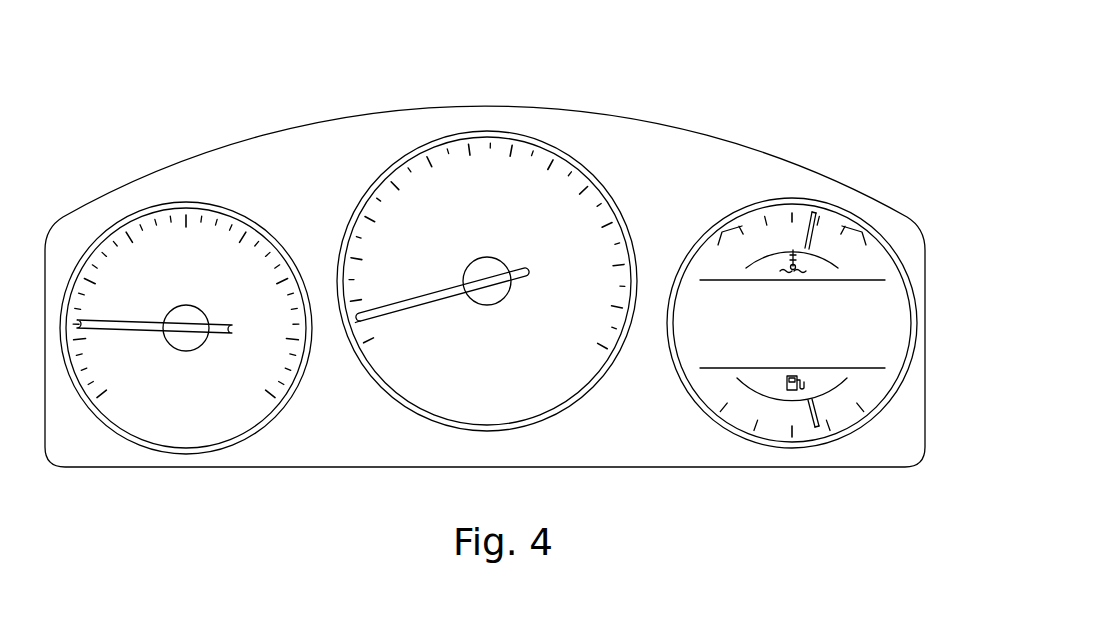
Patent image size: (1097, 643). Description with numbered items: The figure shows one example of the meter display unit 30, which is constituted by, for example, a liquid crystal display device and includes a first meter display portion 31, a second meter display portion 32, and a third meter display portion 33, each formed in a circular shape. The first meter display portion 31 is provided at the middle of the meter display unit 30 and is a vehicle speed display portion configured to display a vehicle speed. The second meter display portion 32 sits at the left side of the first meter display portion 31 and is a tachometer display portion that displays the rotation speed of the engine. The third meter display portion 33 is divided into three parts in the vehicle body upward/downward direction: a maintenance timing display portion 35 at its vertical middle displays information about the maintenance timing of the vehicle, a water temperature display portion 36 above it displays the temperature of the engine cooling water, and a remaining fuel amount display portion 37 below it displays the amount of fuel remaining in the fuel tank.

The meter display unit 30 is at (673, 126).
The first meter display portion 31 is at (492, 130).
The second meter display portion 32 is at (158, 203).
The third meter display portion 33 is at (814, 288).
The maintenance timing display portion 35 is at (883, 315).
The water temperature display portion 36 is at (884, 257).
The remaining fuel amount display portion 37 is at (852, 414).